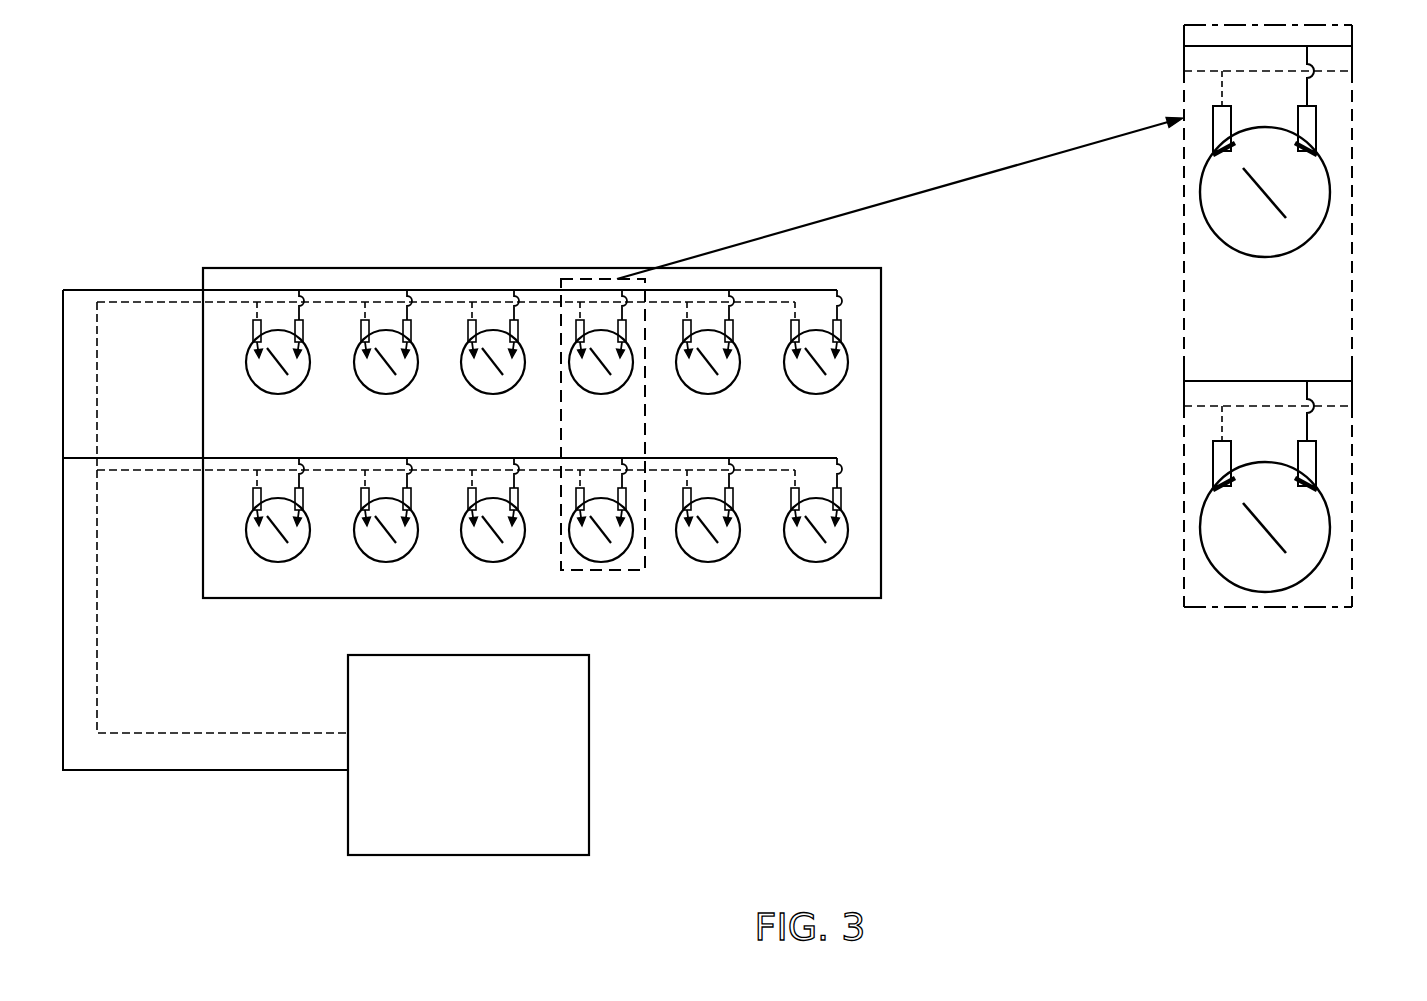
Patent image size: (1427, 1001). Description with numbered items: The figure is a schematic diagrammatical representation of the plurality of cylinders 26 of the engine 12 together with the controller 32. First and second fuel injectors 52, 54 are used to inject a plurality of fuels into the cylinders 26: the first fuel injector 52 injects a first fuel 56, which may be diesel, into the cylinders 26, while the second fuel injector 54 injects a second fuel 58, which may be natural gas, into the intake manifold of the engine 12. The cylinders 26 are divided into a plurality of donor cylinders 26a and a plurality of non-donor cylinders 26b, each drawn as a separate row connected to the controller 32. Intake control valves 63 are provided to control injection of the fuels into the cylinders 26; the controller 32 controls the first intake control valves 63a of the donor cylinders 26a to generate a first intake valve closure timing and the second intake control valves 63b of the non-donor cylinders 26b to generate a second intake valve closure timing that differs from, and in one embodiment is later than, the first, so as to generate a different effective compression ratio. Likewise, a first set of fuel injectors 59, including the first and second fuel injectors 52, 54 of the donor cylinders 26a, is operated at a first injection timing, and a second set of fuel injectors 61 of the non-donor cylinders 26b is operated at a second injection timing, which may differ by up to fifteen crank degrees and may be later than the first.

The engine 12 is at (221, 247).
The plurality of cylinders 26 is at (835, 316).
The donor cylinders 26a is at (728, 555).
The non-donor cylinders 26b is at (728, 388).
The controller 32 is at (589, 754).
The first fuel injector 52 is at (470, 320).
The second fuel injector 54 is at (516, 320).
The first fuel 56 is at (253, 331).
The second fuel 58 is at (299, 342).
The first set of fuel injectors 59 is at (440, 223).
The second set of fuel injectors 61 is at (333, 418).
The intake control valves 63 is at (1215, 346).
The first intake control valves 63a is at (1300, 483).
The second intake control valves 63b is at (1300, 148).